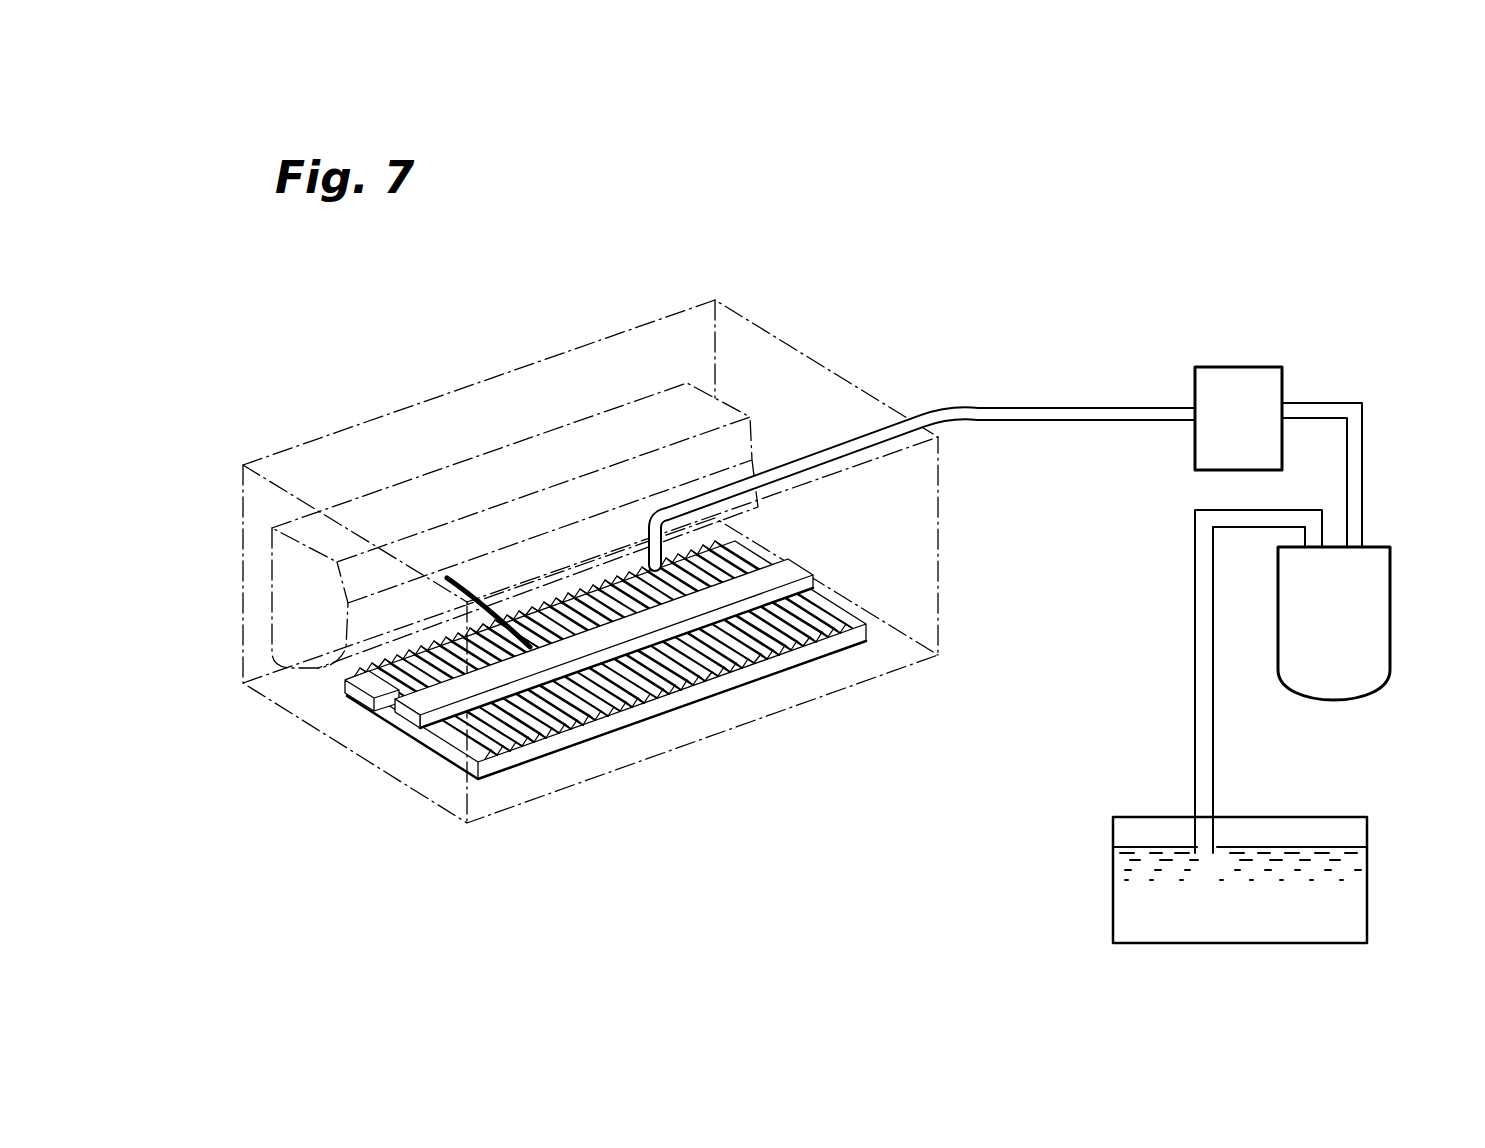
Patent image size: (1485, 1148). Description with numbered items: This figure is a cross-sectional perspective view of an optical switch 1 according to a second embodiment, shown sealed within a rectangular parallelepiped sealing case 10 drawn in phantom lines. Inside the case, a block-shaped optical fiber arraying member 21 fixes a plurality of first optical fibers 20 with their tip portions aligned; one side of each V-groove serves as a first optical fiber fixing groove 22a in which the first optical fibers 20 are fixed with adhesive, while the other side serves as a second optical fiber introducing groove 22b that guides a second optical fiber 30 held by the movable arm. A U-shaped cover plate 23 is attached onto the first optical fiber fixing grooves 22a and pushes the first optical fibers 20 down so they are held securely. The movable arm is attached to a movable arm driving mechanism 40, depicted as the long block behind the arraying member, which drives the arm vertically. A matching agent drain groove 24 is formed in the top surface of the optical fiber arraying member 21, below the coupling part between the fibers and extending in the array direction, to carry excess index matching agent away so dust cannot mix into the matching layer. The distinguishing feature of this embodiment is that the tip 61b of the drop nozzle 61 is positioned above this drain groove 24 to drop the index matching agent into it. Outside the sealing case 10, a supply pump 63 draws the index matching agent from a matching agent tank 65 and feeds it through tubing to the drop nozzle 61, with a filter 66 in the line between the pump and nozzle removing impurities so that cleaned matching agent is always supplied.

The optical switch 1 is at (975, 213).
The sealing case 10 is at (632, 328).
The first optical fibers 20 is at (546, 698).
The optical fiber arraying member 21 is at (440, 747).
The first optical fiber fixing grooves 22a is at (653, 710).
The second optical fiber introducing groove 22b is at (353, 692).
The cover plate 23 is at (405, 712).
The matching agent drain groove 24 is at (390, 703).
The second optical fibers 30 is at (457, 577).
The movable arm driving mechanism 40 is at (283, 592).
The drop nozzle 61 is at (1190, 513).
The tip of drop nozzle 61b is at (677, 510).
The supply pump 63 is at (1393, 647).
The matching agent tank 65 is at (1370, 857).
The filter 66 is at (1252, 367).